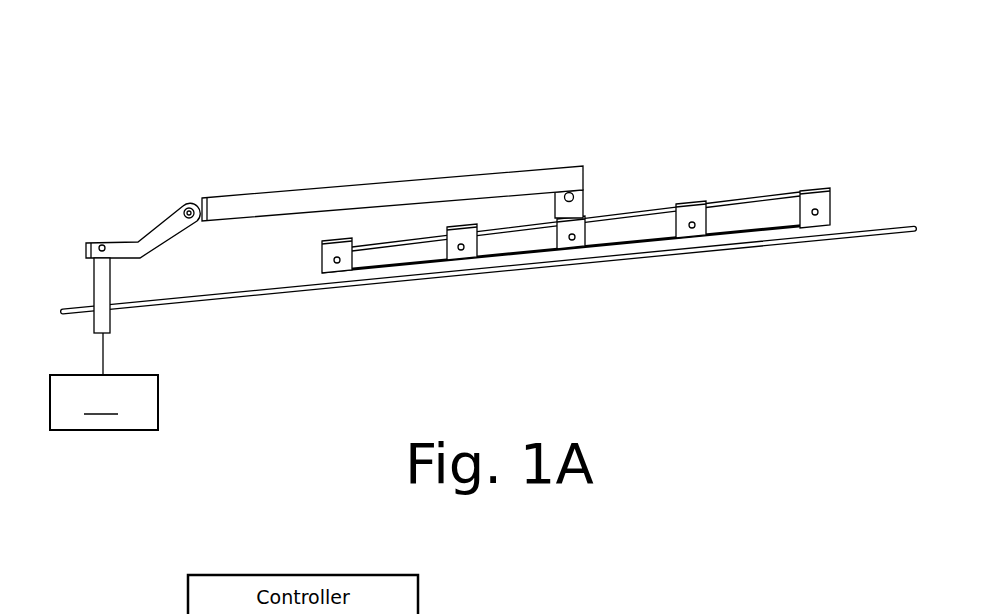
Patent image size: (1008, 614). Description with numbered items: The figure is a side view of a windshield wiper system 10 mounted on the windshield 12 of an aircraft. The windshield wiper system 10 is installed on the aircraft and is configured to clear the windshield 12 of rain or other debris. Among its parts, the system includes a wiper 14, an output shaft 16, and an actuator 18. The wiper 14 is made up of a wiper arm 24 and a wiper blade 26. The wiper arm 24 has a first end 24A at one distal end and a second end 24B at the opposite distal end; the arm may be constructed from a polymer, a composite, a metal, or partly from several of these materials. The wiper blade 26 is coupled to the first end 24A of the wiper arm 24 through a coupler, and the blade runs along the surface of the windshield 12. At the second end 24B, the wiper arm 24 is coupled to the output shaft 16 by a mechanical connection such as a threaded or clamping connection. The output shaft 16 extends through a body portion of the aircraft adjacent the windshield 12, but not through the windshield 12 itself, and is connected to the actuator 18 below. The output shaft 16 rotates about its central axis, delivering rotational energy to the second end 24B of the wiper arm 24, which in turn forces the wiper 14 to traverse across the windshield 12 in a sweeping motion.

The windshield wiper system 10 is at (152, 110).
The windshield 12 is at (871, 243).
The wiper 14 is at (380, 126).
The output shaft 16 is at (114, 316).
The actuator 18 is at (104, 381).
The wiper arm 24 is at (313, 186).
The first end 24A is at (563, 156).
The second end 24B is at (84, 245).
The wiper blade 26 is at (749, 196).